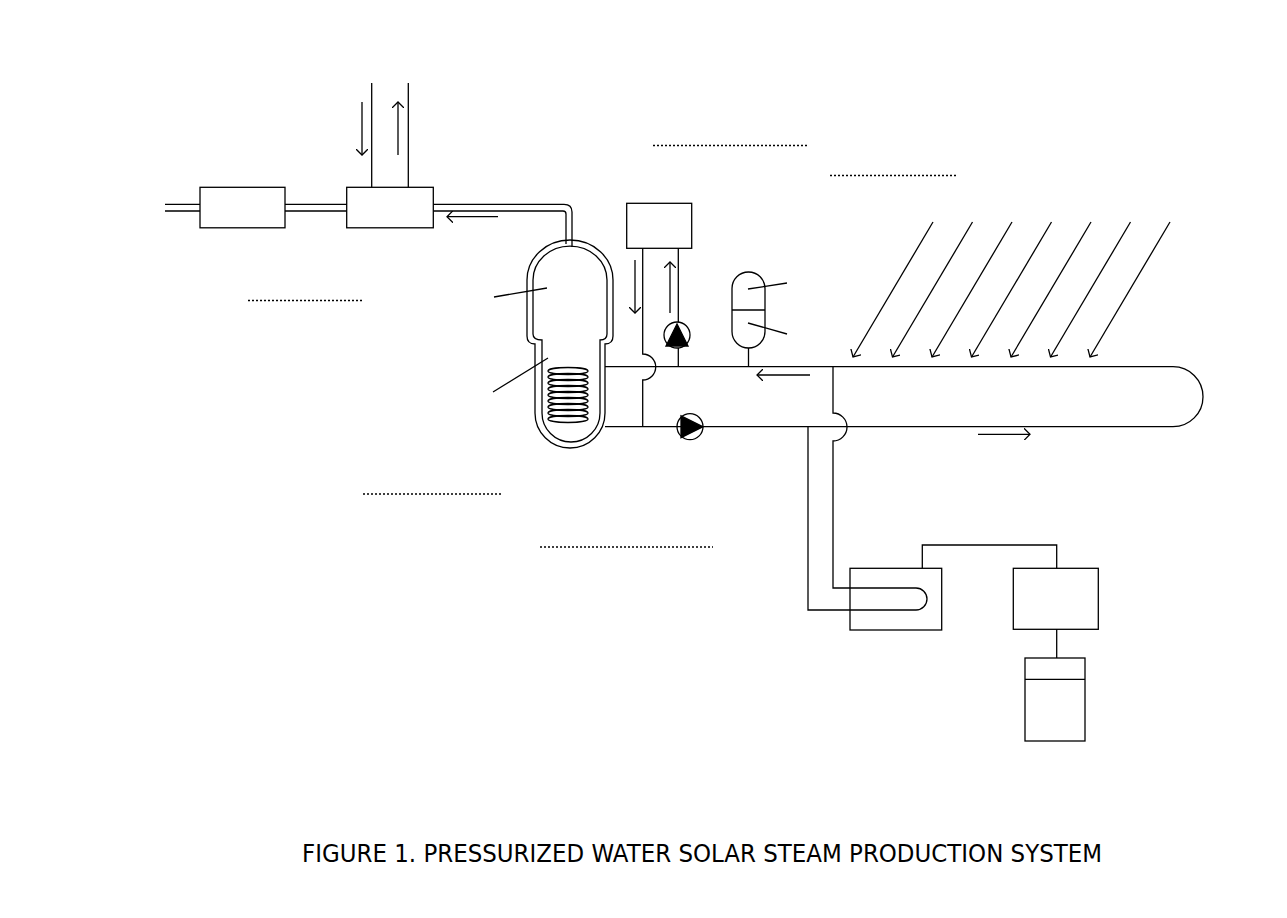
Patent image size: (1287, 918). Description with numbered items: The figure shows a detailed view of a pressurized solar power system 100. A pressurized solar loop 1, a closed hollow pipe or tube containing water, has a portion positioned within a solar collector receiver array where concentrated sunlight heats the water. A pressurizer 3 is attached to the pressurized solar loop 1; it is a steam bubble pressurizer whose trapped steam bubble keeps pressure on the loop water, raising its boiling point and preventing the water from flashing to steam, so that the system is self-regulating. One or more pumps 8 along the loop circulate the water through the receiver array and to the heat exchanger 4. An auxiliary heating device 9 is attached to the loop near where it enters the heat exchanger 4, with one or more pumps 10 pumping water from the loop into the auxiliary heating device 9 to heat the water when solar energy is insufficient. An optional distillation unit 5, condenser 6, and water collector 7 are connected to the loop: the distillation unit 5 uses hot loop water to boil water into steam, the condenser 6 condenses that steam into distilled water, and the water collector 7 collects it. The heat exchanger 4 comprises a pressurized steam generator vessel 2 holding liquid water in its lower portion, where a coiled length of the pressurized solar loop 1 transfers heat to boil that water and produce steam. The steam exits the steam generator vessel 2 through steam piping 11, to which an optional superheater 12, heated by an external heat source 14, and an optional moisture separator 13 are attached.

The pressurized solar power system 100 is at (1046, 64).
The pressurized solar loop 1 is at (1155, 363).
The steam generator vessel 2 is at (593, 242).
The pressurizer 3 is at (750, 272).
The heat exchanger 4 is at (563, 427).
The distillation unit 5 is at (848, 617).
The condenser 6 is at (1098, 620).
The water collector 7 is at (1023, 728).
The pump 8 is at (692, 443).
The auxiliary heating device 9 is at (692, 226).
The pump 10 is at (688, 322).
The steam piping 11 is at (440, 203).
The superheater 12 is at (392, 228).
The moisture separator 13 is at (242, 228).
The external heat source 14 is at (385, 124).